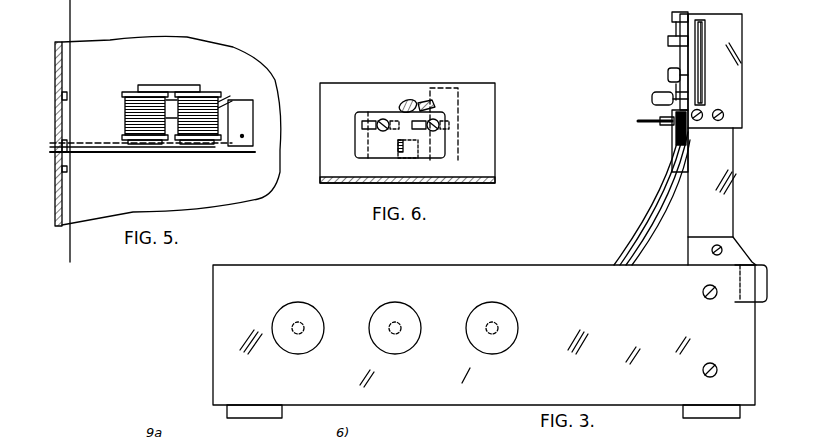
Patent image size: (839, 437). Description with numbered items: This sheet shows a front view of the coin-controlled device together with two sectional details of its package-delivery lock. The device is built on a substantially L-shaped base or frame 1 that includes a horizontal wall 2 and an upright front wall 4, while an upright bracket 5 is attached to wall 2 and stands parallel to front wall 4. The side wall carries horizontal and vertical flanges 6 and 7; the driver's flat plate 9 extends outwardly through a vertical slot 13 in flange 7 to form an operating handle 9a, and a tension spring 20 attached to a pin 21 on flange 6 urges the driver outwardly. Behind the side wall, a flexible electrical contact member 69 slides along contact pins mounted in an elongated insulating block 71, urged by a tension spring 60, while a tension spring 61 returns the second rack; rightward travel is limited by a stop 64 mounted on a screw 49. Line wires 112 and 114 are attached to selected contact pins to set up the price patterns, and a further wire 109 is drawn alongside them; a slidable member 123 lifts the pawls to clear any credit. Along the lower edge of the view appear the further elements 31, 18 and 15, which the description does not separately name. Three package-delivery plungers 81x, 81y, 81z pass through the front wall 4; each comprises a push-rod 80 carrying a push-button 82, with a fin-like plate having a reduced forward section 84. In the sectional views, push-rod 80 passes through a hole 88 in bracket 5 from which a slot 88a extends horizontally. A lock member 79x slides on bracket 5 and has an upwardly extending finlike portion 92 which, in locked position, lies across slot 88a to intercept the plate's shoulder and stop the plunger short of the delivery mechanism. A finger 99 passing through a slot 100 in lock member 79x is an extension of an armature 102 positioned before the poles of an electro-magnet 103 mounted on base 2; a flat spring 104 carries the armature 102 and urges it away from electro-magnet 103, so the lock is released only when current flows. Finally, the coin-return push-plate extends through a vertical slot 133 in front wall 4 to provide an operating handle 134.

In FIG. 3, the base or frame 1 is at (745, 172).
In FIG. 5, the horizontal wall 2 is at (168, 48).
In FIG. 3, the front wall 4 is at (520, 272).
In FIG. 5, the bracket 5 is at (55, 208).
In FIG. 6, the bracket 5 is at (484, 136).
In FIG. 5, the horizontal flange 6 is at (33, 23).
In FIG. 3, the vertical flange 7 is at (708, 78).
In FIG. 3, the operating handle 9a is at (703, 62).
In FIG. 3, the vertical slot 13 is at (688, 43).
In FIG. 3, the screw 49 is at (690, 88).
In FIG. 3, the tension spring 60 is at (652, 99).
In FIG. 3, the tension spring 61 is at (676, 135).
In FIG. 3, the stop 64 is at (668, 76).
In FIG. 3, the electrical contact member 69 is at (663, 108).
In FIG. 3, the block 71 is at (678, 164).
In FIG. 5, the lock member 79x is at (76, 128).
In FIG. 6, the lock member 79x is at (385, 100).
In FIG. 6, the push-rod 80 is at (405, 100).
In FIG. 3, the package-delivery plunger 81x is at (312, 322).
In FIG. 3, the package-delivery plunger 81y is at (409, 322).
In FIG. 3, the package-delivery plunger 81z is at (507, 322).
In FIG. 3, the push-button 82 is at (298, 352).
In FIG. 6, the reduced forward section 84 is at (417, 102).
In FIG. 6, the hole 88 is at (410, 99).
In FIG. 6, the slot 88a is at (426, 100).
In FIG. 6, the finlike portion 92 is at (446, 95).
In FIG. 5, the finger 99 is at (97, 153).
In FIG. 6, the finger 99 is at (398, 143).
In FIG. 6, the slot 100 is at (410, 158).
In FIG. 5, the armature 102 is at (194, 150).
In FIG. 5, the electro-magnet 103 is at (205, 108).
In FIG. 5, the flat spring 104 is at (237, 146).
In FIG. 3, the wire 109 is at (650, 214).
In FIG. 3, the line wire 112 is at (652, 228).
In FIG. 3, the line wire 114 is at (646, 200).
In FIG. 3, the vertical slot 133 is at (740, 268).
In FIG. 3, the operating handle 134 is at (740, 293).
In FIG. 3, the member 123 is at (772, 431).
In FIG. 3, the pin 21 is at (286, 431).
In FIG. 3, the flat plate 9 is at (314, 431).
In FIG. 3, the element 31 is at (375, 431).
In FIG. 3, the element 18 is at (401, 431).
In FIG. 3, the element 15 is at (431, 431).
In FIG. 3, the tension spring 20 is at (476, 431).